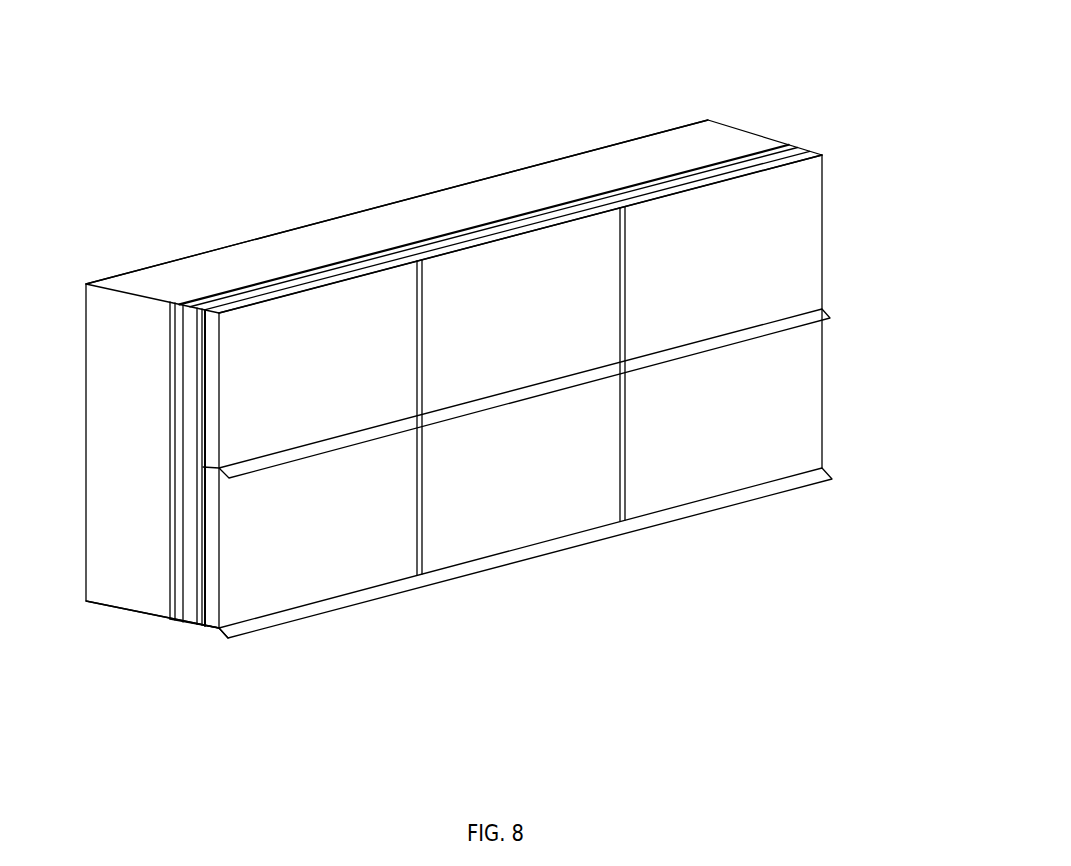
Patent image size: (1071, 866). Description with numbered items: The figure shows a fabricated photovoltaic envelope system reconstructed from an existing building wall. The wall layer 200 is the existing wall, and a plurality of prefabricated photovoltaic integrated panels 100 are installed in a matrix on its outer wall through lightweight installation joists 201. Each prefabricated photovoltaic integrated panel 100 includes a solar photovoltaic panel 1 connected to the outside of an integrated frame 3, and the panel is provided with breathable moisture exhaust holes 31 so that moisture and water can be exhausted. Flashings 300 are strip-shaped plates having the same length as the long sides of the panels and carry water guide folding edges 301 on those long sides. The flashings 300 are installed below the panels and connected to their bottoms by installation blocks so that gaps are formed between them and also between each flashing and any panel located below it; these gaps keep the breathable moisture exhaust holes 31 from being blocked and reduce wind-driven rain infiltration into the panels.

The prefabricated photovoltaic integrated panel 100 is at (822, 155).
The solar photovoltaic panel 1 is at (712, 460).
The integrated frame 3 is at (720, 160).
The breathable moisture exhaust hole 31 is at (612, 192).
The wall layer 200 is at (468, 207).
The lightweight installation joist 201 is at (192, 307).
The flashing 300 is at (215, 637).
The water guide folding edge 301 is at (485, 565).